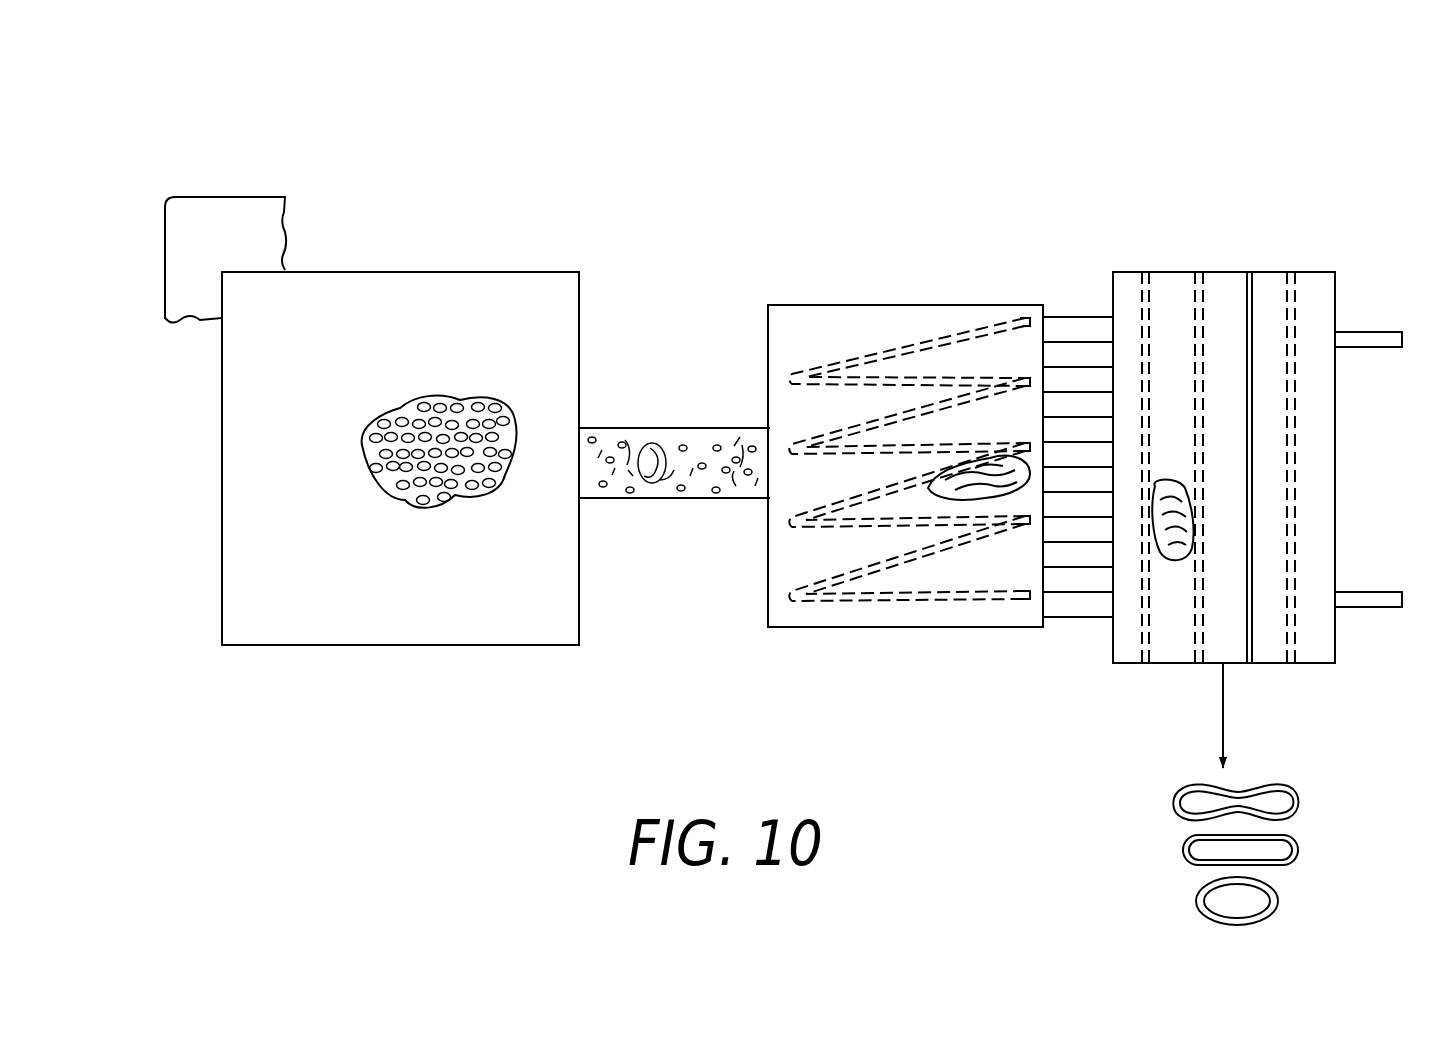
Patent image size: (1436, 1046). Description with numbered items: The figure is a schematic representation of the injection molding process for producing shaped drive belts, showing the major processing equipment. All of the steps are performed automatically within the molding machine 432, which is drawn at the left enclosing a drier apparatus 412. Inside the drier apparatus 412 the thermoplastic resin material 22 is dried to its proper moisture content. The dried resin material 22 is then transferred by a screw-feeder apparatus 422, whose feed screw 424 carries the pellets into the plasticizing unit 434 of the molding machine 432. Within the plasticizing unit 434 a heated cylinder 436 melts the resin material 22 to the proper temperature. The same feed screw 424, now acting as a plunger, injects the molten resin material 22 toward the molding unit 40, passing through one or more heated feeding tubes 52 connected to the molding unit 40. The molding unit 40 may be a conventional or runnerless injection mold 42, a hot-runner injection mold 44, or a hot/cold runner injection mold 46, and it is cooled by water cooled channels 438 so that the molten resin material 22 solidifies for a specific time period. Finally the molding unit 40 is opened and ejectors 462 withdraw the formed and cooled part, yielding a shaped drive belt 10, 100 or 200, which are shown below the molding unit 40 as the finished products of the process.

The molding machine 432 is at (237, 249).
The drier apparatus 412 is at (333, 349).
The resin material 22 is at (482, 397).
The screw-feeder apparatus 422 is at (619, 500).
The feed screw 424 is at (614, 425).
The plasticizing unit 434 is at (840, 343).
The heated cylinder 436 is at (950, 250).
The heated feeding tubes 52 is at (1077, 523).
The molding unit 40 is at (1316, 264).
The runnerless injection mold 42 is at (1193, 365).
The hot-runner injection mold 44 is at (1245, 354).
The hot/cold runner injection mold 46 is at (1287, 356).
The ejectors 462 is at (1368, 340).
The water cooled channels 438 is at (1200, 620).
The shaped drive belt 10 is at (1293, 784).
The shaped drive belt 100 is at (1390, 847).
The shaped drive belt 200 is at (1282, 896).